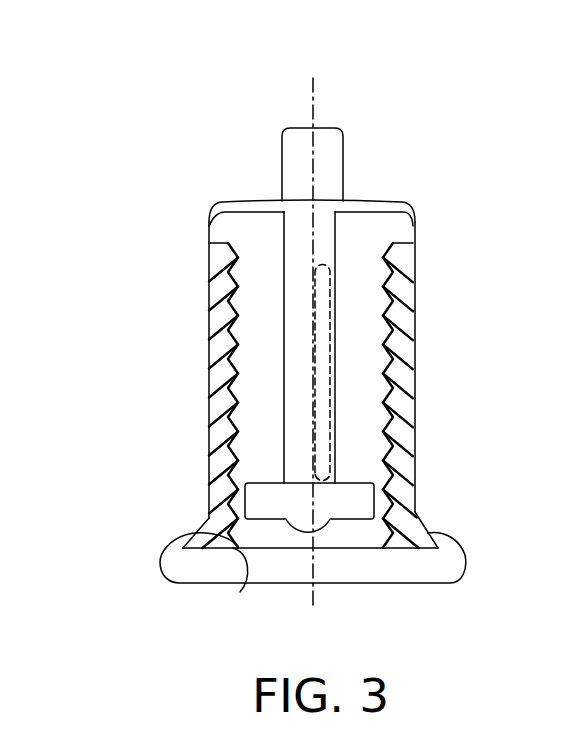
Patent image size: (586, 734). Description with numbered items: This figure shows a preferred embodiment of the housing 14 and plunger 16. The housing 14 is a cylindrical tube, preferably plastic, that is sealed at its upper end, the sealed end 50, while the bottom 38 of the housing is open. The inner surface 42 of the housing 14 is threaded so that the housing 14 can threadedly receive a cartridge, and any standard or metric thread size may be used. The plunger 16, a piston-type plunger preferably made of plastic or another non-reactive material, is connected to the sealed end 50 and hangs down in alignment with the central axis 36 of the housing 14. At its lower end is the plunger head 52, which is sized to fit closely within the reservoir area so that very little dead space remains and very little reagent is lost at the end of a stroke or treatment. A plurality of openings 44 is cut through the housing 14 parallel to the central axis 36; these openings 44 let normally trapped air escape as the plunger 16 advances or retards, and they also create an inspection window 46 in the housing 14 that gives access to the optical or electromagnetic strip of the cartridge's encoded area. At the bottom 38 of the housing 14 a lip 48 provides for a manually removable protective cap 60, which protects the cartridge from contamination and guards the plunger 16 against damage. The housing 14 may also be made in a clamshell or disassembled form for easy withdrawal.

The housing 14 is at (208, 378).
The plunger 16 is at (323, 240).
The central axis 36 is at (312, 98).
The bottom 38 is at (365, 532).
The inner surface 42 is at (240, 592).
The openings 44 is at (322, 330).
The inspection window 46 is at (323, 293).
The lip 48 is at (418, 537).
The sealed end 50 is at (268, 198).
The plunger head 52 is at (321, 512).
The protective cap 60 is at (185, 572).